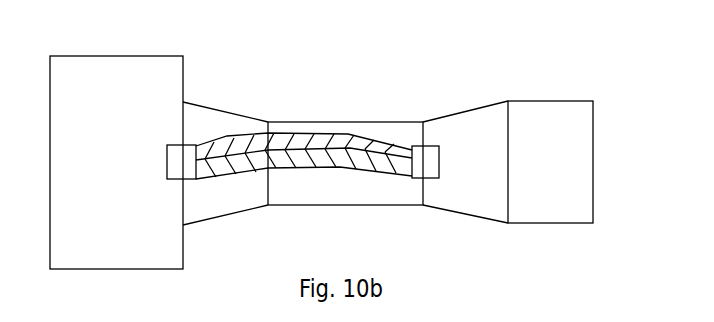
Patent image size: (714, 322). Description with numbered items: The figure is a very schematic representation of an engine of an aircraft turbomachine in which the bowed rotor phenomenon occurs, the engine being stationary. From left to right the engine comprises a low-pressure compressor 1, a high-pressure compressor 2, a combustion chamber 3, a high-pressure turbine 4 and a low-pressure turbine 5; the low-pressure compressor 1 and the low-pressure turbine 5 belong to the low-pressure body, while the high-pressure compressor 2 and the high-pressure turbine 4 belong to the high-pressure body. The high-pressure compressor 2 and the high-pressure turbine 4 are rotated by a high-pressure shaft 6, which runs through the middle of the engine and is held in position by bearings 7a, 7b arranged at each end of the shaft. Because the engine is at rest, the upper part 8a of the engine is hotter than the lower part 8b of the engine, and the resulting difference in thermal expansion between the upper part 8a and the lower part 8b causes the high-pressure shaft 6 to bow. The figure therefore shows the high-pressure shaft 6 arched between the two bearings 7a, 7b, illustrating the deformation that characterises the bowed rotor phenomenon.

The low-pressure compressor 1 is at (92, 68).
The high-pressure compressor 2 is at (216, 112).
The combustion chamber 3 is at (328, 123).
The high-pressure turbine 4 is at (495, 123).
The low-pressure turbine 5 is at (543, 118).
The high-pressure shaft 6 is at (304, 162).
The bearing 7a is at (167, 163).
The bearing 7b is at (439, 162).
The upper part of the engine 8a is at (368, 138).
The lower part of the engine 8b is at (364, 168).